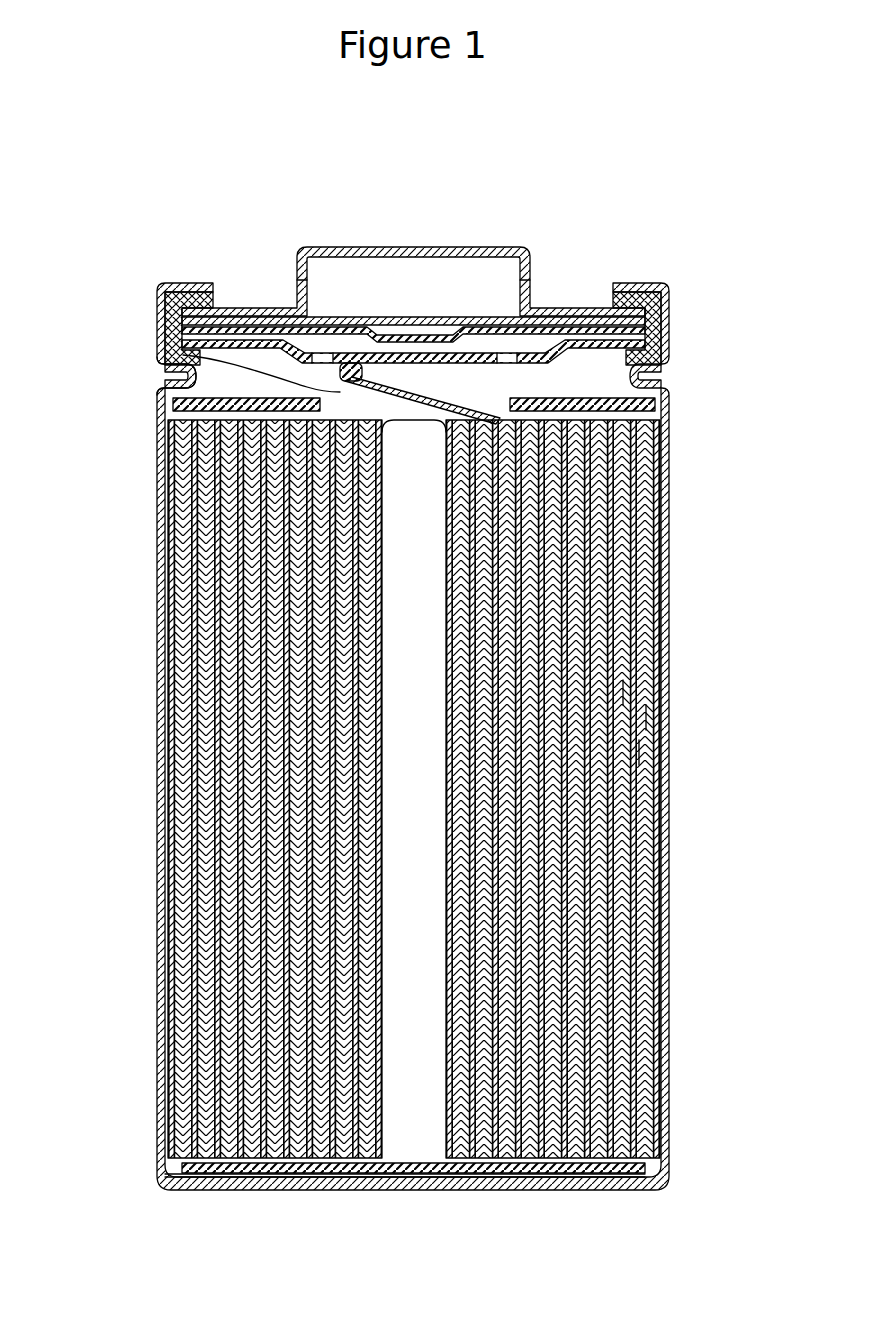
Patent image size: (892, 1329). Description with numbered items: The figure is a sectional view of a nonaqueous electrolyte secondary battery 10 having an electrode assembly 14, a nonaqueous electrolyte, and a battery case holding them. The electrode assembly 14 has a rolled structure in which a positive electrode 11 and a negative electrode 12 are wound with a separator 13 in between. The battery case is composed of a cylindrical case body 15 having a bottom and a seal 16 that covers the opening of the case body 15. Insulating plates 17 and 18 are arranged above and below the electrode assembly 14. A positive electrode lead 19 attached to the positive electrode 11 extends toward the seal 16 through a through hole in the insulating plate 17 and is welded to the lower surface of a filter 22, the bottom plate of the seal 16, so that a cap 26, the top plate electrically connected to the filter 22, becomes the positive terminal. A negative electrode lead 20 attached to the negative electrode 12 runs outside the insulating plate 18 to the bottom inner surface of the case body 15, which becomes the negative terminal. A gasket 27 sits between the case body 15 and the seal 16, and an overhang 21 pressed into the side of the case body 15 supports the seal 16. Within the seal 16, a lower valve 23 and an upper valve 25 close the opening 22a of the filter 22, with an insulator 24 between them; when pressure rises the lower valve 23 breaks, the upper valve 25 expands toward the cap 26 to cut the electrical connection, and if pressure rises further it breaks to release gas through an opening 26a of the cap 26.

The nonaqueous electrolyte secondary battery 10 is at (648, 146).
The positive electrode 11 is at (620, 693).
The negative electrode 12 is at (645, 717).
The separator 13 is at (635, 752).
The electrode assembly 14 is at (749, 665).
The case body 15 is at (669, 279).
The seal 16 is at (525, 238).
The insulating plate 17 is at (640, 405).
The insulating plate 18 is at (665, 1167).
The positive electrode lead 19 is at (183, 355).
The negative electrode lead 20 is at (167, 1172).
The overhang 21 is at (185, 380).
The filter 22 is at (425, 360).
The opening 22a is at (508, 360).
The lower valve 23 is at (330, 337).
The insulator 24 is at (236, 326).
The upper valve 25 is at (357, 338).
The cap 26 is at (487, 252).
The opening 26a is at (527, 270).
The gasket 27 is at (657, 316).